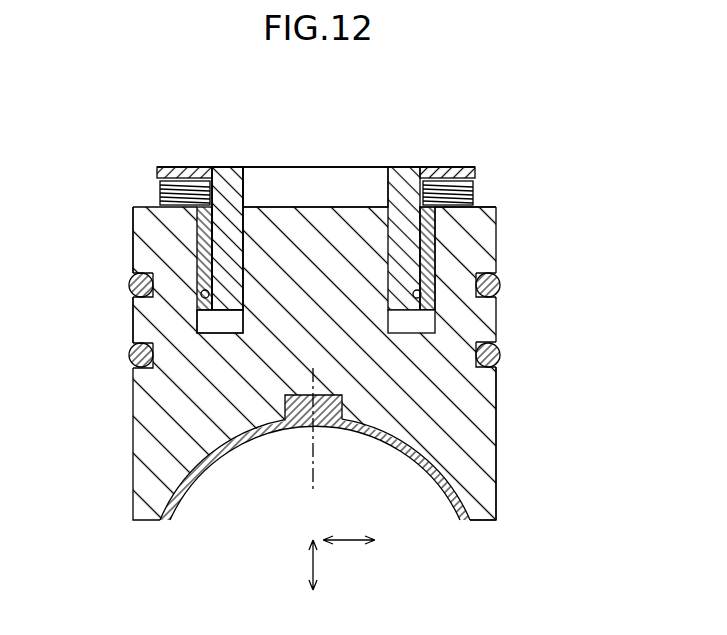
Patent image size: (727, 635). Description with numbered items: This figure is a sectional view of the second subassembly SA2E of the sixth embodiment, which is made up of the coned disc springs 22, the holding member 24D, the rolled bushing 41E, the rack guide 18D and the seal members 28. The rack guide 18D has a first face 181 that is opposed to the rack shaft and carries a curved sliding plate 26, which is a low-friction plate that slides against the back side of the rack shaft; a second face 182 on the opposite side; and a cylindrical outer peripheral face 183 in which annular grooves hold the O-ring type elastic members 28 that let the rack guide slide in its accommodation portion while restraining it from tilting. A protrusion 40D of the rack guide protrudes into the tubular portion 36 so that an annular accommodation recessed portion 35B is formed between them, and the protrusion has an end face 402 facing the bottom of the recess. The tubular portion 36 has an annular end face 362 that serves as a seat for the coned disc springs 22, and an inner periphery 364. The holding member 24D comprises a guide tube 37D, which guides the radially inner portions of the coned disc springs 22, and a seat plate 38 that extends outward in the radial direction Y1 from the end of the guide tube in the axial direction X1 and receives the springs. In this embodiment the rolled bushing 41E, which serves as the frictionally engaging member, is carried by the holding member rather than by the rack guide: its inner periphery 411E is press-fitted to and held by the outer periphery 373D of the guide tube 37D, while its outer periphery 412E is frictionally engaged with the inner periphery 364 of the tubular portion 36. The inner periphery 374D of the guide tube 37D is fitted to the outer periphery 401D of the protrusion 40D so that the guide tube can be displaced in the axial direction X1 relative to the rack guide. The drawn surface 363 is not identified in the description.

The rack guide 18D is at (509, 458).
The sliding plate 26 is at (248, 437).
The seat plate 38 is at (163, 167).
The second subassembly SA2E is at (461, 157).
The end face of the protrusion 402 is at (343, 207).
The protrusion 40D is at (282, 223).
The outer periphery of the protrusion 401D is at (240, 229).
The guide tube 37D is at (227, 257).
The outer periphery of the guide tube 373D is at (200, 268).
The holding member 24D is at (433, 239).
The rolled bushing 41E is at (428, 253).
The inner periphery of the tubular portion 364 is at (197, 312).
The outer periphery of the rolled bushing 412E is at (437, 310).
The inner periphery of the rolled bushing 411E is at (437, 293).
The inner periphery of the guide tube 374D is at (245, 300).
The annular accommodation recessed portion 35B is at (225, 327).
The coned disc springs 22 is at (475, 201).
The end face of the tubular portion 362 is at (155, 204).
The second face 182 is at (478, 208).
The elastic members 28 is at (499, 358).
The side surface 363 is at (131, 312).
The tubular portion 36 is at (131, 340).
The outer peripheral face 183 is at (499, 415).
The first face 181 is at (483, 521).
The radial direction Y1 is at (351, 540).
The axial direction X1 is at (315, 563).